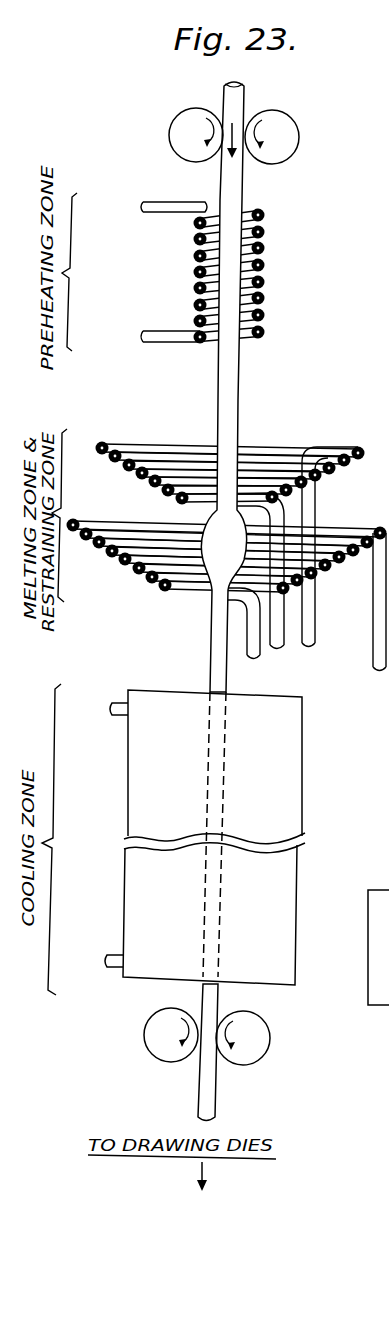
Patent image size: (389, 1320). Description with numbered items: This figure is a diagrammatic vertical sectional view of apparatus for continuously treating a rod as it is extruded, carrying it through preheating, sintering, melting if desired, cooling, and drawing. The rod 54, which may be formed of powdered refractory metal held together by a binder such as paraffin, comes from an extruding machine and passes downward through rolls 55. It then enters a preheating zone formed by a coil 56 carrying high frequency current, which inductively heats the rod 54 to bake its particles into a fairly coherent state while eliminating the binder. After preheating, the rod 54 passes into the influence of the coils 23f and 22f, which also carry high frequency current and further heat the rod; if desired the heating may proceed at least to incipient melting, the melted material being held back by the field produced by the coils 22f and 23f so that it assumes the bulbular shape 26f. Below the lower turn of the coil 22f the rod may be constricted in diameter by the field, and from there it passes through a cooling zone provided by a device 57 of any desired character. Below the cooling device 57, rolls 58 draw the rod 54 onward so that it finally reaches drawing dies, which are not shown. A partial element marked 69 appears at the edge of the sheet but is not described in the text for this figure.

The rod 54 is at (243, 100).
The rolls 55 is at (168, 128).
The coil 56 is at (265, 215).
The coil 23f is at (268, 450).
The bulbular shape 26f is at (206, 553).
The coil 22f is at (333, 567).
The cooling device 57 is at (292, 856).
The rolls 58 is at (146, 1031).
The adjacent figure element (fragment) 69 is at (375, 972).